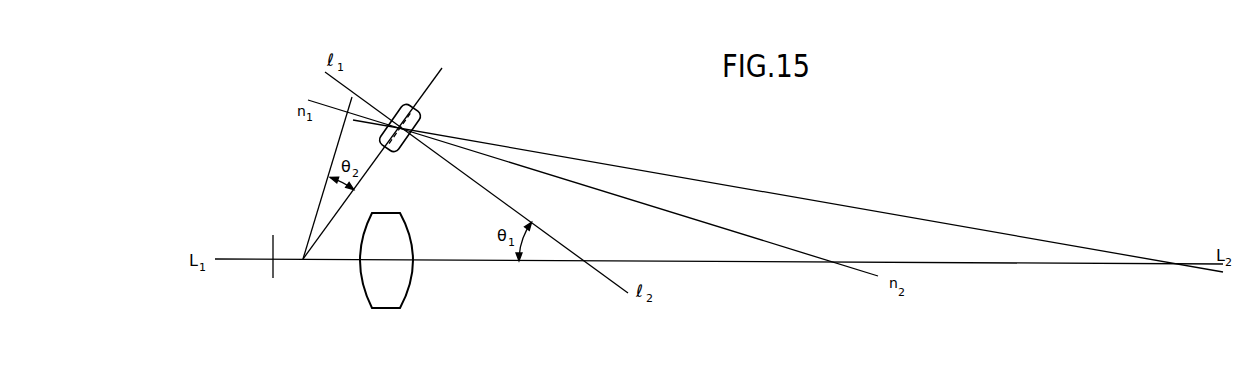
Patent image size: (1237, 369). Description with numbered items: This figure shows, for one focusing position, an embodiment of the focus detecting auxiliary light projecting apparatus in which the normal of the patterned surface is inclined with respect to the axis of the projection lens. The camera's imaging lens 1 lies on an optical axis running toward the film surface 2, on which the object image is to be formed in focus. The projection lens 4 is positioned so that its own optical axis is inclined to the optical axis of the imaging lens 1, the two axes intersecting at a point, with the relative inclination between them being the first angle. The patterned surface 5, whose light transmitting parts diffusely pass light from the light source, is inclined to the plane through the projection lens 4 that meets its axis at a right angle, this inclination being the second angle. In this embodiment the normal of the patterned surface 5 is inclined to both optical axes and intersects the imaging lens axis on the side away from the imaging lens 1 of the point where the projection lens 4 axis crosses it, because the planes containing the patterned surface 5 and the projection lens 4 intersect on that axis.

The imaging lens 1 is at (367, 304).
The film surface 2 is at (273, 270).
The projection lens 4 is at (406, 105).
The patterned surface 5 is at (347, 101).